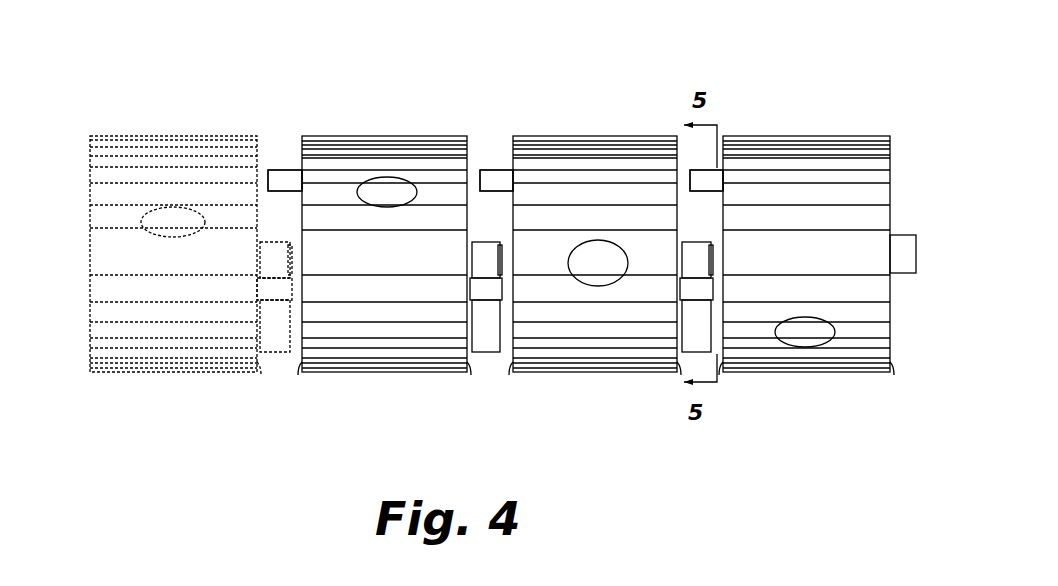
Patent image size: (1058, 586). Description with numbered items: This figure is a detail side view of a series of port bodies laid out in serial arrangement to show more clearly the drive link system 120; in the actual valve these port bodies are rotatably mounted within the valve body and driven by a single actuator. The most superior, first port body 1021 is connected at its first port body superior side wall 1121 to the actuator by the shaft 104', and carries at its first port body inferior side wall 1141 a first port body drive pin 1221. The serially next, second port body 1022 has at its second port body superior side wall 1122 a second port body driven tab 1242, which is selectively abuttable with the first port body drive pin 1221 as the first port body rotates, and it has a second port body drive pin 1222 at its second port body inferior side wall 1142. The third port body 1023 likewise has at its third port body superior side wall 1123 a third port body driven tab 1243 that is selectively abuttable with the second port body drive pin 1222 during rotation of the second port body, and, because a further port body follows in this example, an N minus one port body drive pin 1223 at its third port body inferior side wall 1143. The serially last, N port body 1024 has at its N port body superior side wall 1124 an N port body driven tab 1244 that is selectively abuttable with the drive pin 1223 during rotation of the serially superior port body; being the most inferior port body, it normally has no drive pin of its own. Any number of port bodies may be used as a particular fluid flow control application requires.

The N port body 1024 is at (168, 130).
The third port body 1023 is at (368, 130).
The second port body 1022 is at (577, 127).
The first port body 1021 is at (777, 127).
The shaft 104' is at (894, 184).
The drive link system 120 is at (278, 160).
The N−1 port body drive pin 1223 is at (276, 168).
The second port body drive pin 1222 is at (485, 168).
The first port body drive pin 1221 is at (690, 168).
The N port body driven tab 1244 is at (274, 354).
The third port body driven tab 1243 is at (486, 352).
The second port body driven tab 1242 is at (713, 308).
The N port body superior side wall 1124 is at (259, 374).
The third port body superior side wall 1123 is at (470, 374).
The second port body superior side wall 1122 is at (680, 374).
The first port body superior side wall 1121 is at (893, 374).
The third port body inferior side wall 1143 is at (298, 374).
The second port body inferior side wall 1142 is at (510, 374).
The first port body inferior side wall 1141 is at (720, 376).